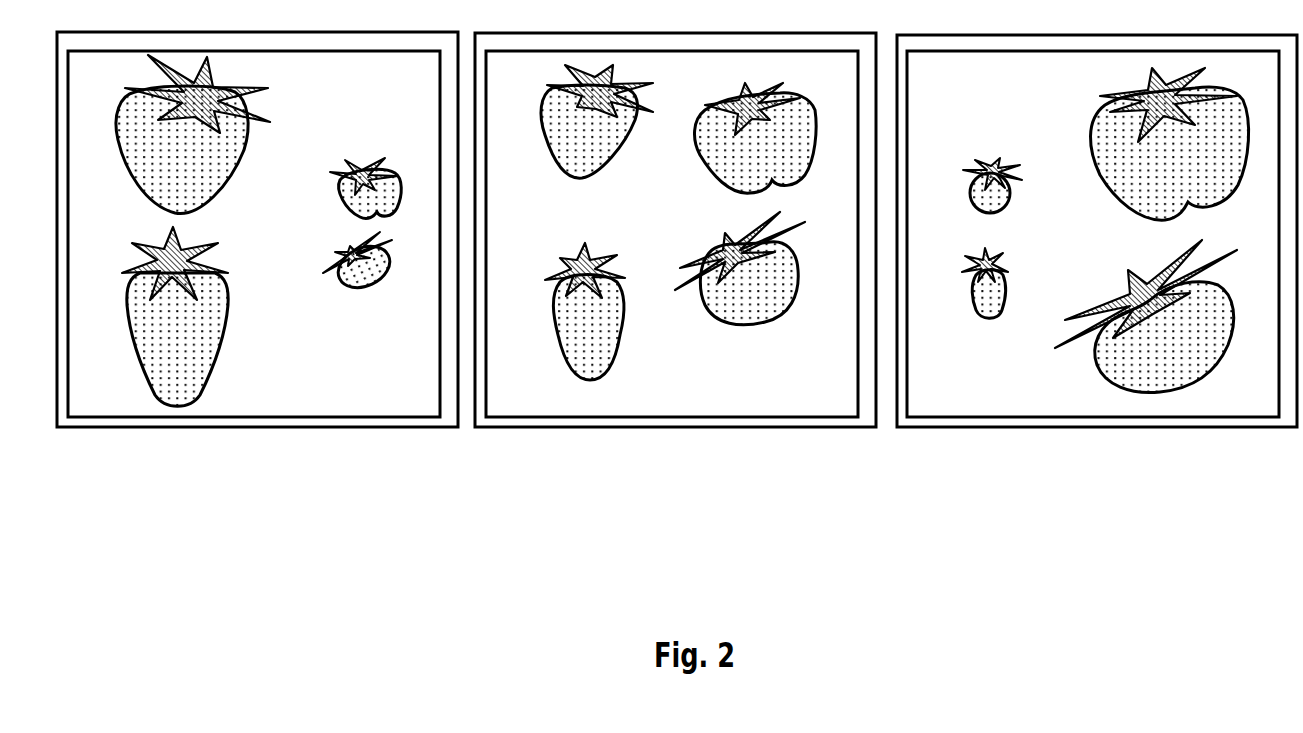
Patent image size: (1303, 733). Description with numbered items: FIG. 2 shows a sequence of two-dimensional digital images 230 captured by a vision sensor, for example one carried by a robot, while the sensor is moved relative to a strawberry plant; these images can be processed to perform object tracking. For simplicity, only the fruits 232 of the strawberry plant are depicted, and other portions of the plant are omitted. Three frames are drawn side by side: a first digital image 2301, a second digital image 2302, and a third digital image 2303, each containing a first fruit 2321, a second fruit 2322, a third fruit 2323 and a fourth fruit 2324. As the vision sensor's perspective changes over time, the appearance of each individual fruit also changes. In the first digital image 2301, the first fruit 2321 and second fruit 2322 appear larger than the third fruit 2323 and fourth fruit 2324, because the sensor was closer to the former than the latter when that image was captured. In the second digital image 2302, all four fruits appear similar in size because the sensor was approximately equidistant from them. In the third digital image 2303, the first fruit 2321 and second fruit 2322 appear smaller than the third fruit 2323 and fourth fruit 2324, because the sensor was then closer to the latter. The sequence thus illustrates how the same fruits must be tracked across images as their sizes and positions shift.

The digital images 230 is at (677, 273).
The first digital image 2301 is at (257, 428).
The second digital image 2302 is at (630, 428).
The third digital image 2303 is at (1033, 428).
The fruits 232 is at (665, 230).
The first fruit 2321 is at (949, 184).
The second fruit 2322 is at (949, 257).
The third fruit 2323 is at (1071, 111).
The fourth fruit 2324 is at (1088, 284).